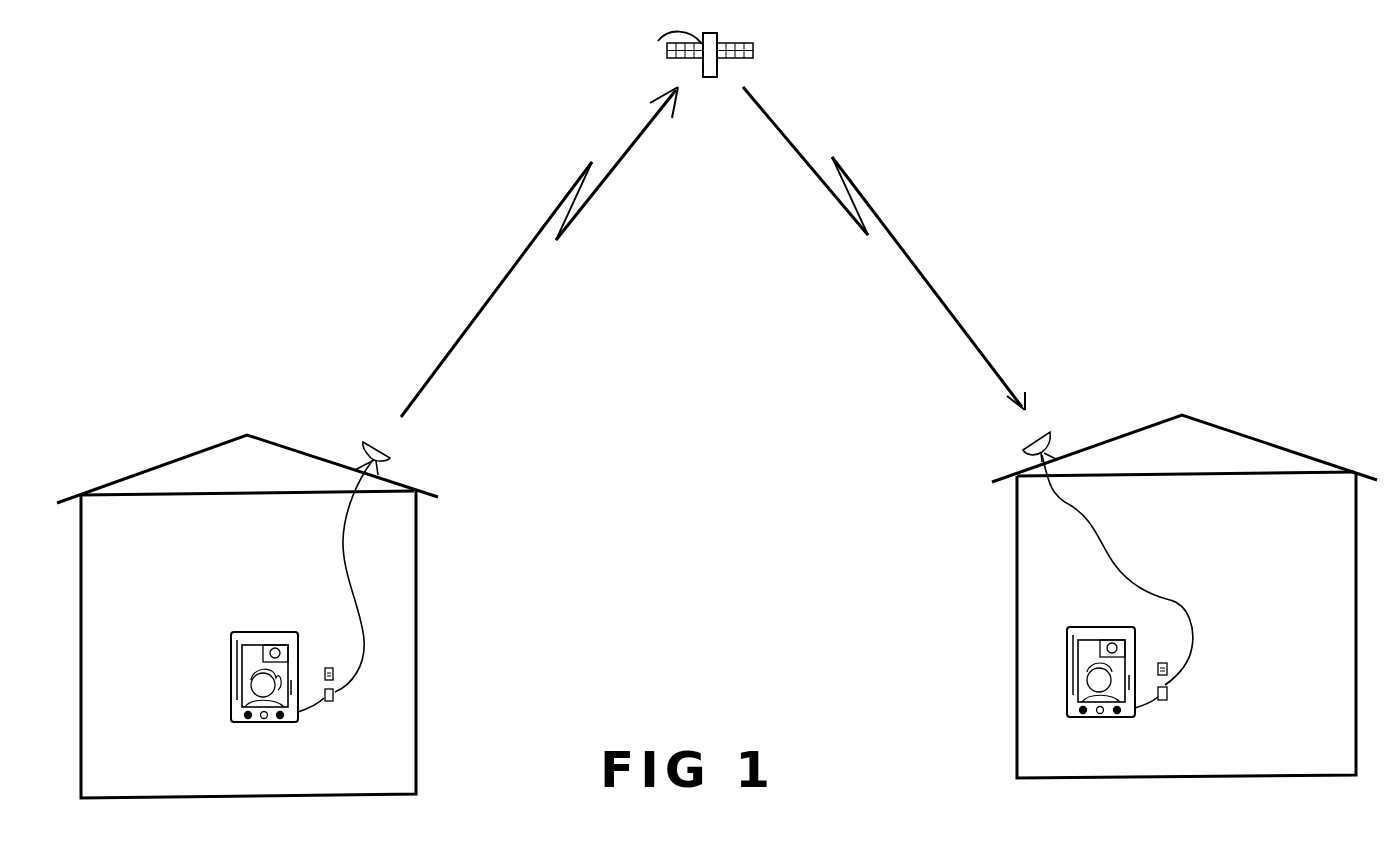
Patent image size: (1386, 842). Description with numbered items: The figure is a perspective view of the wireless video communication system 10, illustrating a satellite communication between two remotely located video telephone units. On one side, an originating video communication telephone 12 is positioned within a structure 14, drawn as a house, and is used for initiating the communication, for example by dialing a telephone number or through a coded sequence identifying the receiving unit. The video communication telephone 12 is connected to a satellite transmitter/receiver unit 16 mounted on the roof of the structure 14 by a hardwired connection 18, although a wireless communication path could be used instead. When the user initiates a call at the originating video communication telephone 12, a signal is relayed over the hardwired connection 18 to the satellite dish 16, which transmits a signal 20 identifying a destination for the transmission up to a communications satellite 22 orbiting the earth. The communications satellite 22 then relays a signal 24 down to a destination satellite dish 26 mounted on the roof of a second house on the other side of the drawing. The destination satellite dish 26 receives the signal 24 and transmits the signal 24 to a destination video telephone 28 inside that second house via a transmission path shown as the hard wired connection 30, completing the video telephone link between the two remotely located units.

The wireless video communication system 10 is at (277, 238).
The originating video communication telephone 12 is at (222, 632).
The structure 14 is at (152, 467).
The satellite transmitter/receiver unit 16 is at (372, 445).
The hardwired connection 18 is at (356, 610).
The signal 20 is at (553, 212).
The communications satellite 22 is at (680, 52).
The signal 24 is at (875, 209).
The destination satellite dish 26 is at (1053, 427).
The destination video telephone 28 is at (1092, 620).
The hard wired connection 30 is at (1183, 610).